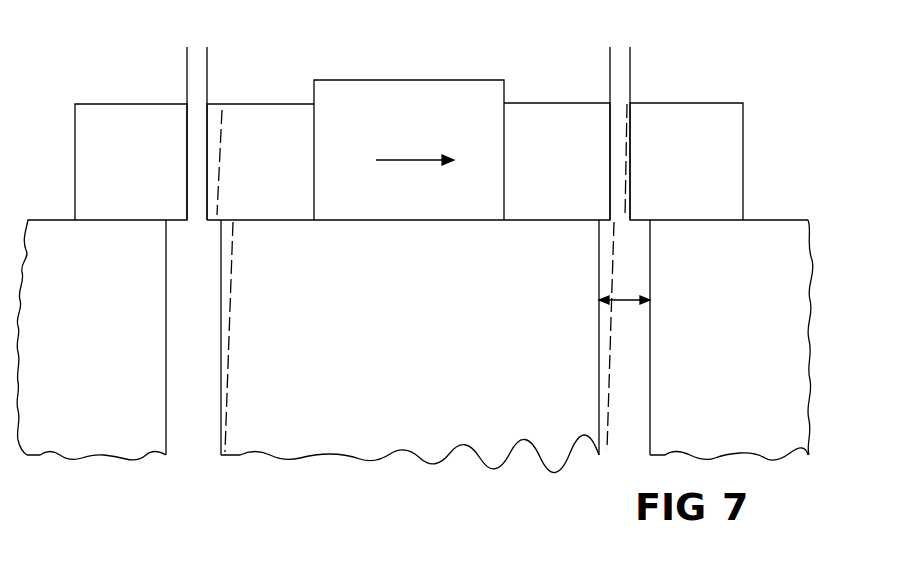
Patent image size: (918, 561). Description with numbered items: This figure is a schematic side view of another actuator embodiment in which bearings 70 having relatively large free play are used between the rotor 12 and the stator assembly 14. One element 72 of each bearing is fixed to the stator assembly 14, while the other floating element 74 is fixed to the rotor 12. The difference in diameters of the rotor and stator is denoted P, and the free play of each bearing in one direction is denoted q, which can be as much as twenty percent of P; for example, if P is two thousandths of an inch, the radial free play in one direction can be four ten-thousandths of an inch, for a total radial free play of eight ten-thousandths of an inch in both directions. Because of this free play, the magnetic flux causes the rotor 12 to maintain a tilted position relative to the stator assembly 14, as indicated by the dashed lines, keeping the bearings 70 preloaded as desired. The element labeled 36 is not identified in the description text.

The rotor 12 is at (520, 273).
The stator assembly 14 is at (793, 220).
The central block / gate 36 is at (380, 80).
The bearings 70 is at (758, 95).
The bearing element 72 is at (705, 103).
The floating element 74 is at (535, 103).
The free play q is at (207, 60).
The difference in diameters of the rotor and stator P is at (627, 298).